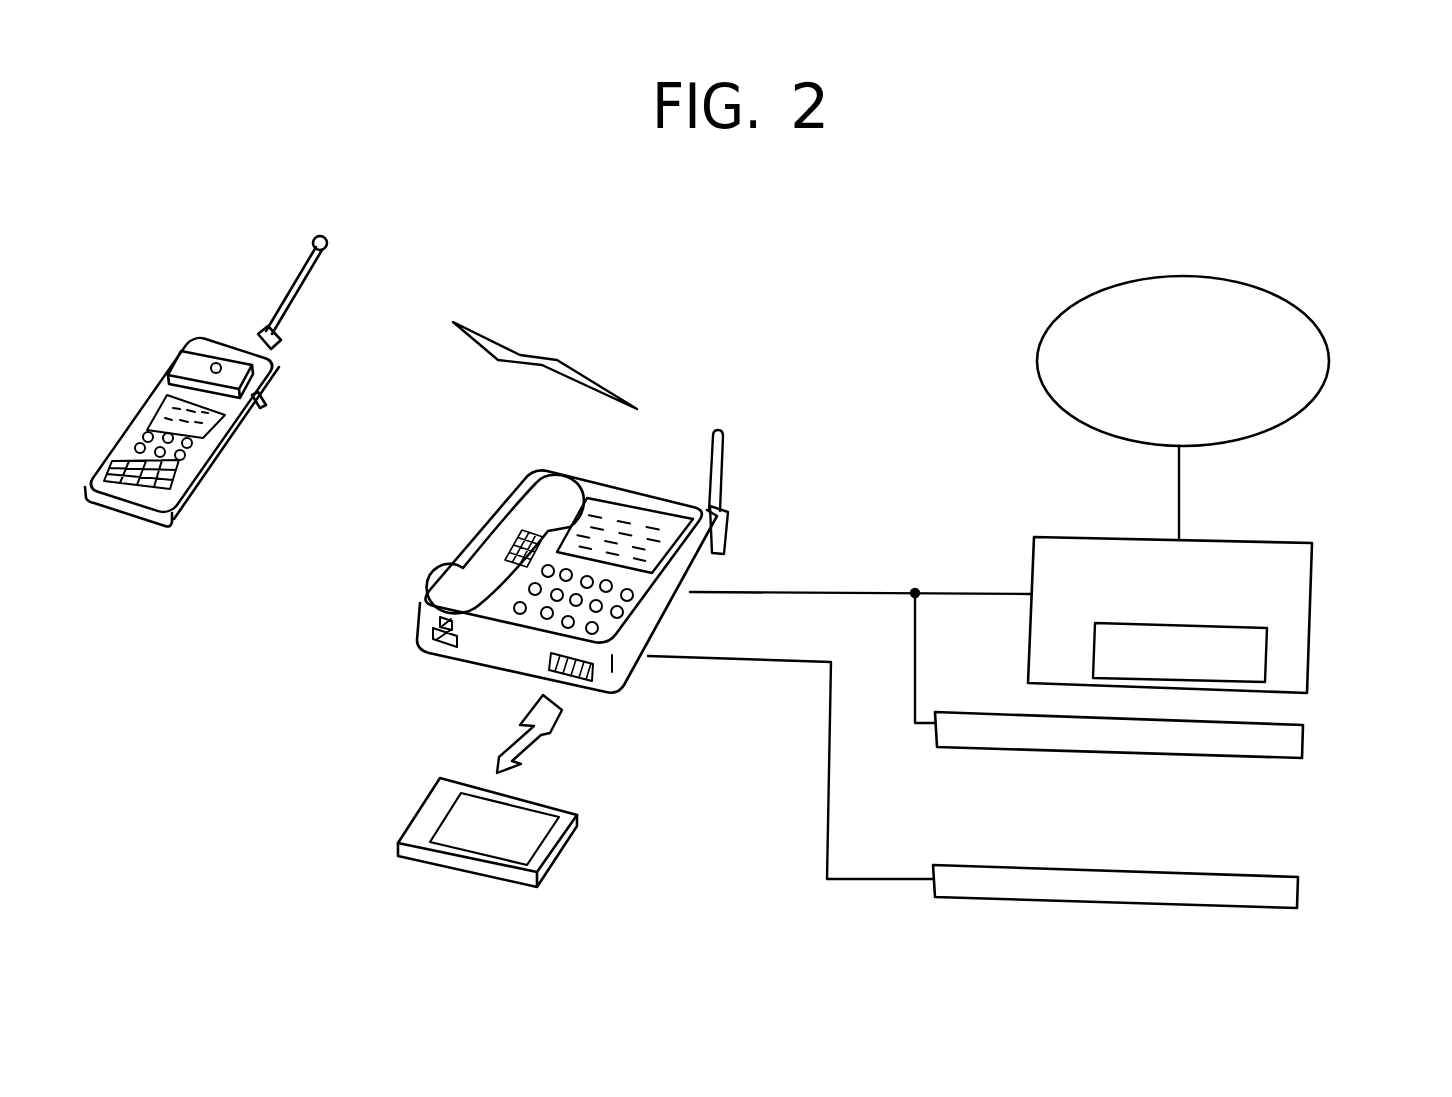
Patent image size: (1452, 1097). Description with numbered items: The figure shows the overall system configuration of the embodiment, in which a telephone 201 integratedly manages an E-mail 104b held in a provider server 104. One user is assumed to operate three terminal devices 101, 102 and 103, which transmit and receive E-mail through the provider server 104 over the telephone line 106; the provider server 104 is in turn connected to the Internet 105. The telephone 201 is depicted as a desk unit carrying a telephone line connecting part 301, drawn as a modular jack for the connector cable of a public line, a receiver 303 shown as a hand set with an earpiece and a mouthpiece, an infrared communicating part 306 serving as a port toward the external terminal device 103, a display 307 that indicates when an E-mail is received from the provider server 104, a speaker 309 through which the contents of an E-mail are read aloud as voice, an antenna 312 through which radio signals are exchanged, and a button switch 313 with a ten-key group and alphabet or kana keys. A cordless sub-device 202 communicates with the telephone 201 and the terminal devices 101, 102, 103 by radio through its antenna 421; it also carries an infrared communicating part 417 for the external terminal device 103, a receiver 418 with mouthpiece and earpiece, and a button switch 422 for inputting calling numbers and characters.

The terminal device 101 is at (1305, 740).
The terminal device 102 is at (1297, 893).
The terminal device 103 is at (566, 856).
The provider server 104 is at (1221, 615).
The E-mail 104b is at (1230, 625).
The Internet 105 is at (1309, 403).
The telephone line 106 is at (843, 592).
The telephone 201 is at (577, 607).
The sub-device 202 is at (254, 430).
The telephone line connecting part 301 is at (434, 634).
The receiver 303 is at (480, 552).
The infrared communicating part 306 is at (595, 673).
The display 307 is at (660, 542).
The speaker 309 is at (518, 530).
The antenna 312 is at (727, 450).
The button switch 313 is at (616, 610).
The infrared communicating part 417 is at (272, 392).
The receiver 418 is at (185, 477).
The antenna 421 is at (312, 278).
The button switch 422 is at (192, 446).